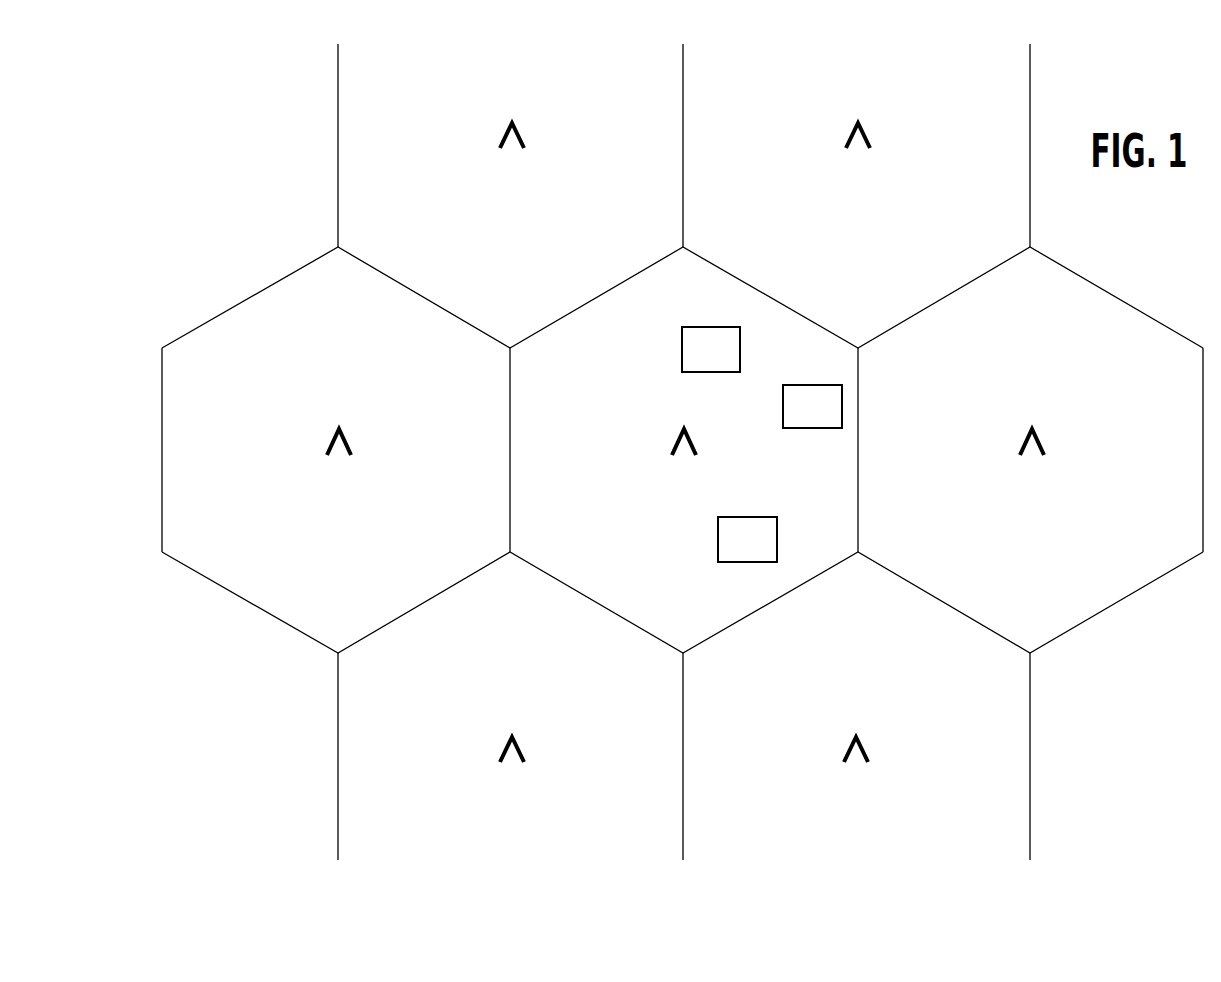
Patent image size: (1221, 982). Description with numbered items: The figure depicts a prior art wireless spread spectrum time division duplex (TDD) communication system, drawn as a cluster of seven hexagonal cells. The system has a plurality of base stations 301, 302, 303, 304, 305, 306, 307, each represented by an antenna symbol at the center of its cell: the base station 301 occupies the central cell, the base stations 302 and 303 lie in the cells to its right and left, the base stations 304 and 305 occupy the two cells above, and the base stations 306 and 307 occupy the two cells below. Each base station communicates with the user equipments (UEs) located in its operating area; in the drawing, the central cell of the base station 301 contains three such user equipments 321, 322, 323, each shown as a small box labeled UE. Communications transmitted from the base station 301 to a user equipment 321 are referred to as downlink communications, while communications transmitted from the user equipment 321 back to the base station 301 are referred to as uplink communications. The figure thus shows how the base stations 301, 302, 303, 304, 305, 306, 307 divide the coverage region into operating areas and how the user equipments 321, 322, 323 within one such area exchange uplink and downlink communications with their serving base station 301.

The base station 301 is at (688, 462).
The base station 302 is at (1036, 461).
The base station 303 is at (342, 461).
The base station 304 is at (516, 155).
The base station 305 is at (862, 155).
The base station 306 is at (515, 768).
The base station 307 is at (861, 768).
The user equipment 321 is at (718, 540).
The user equipment 322 is at (817, 428).
The user equipment 323 is at (702, 372).